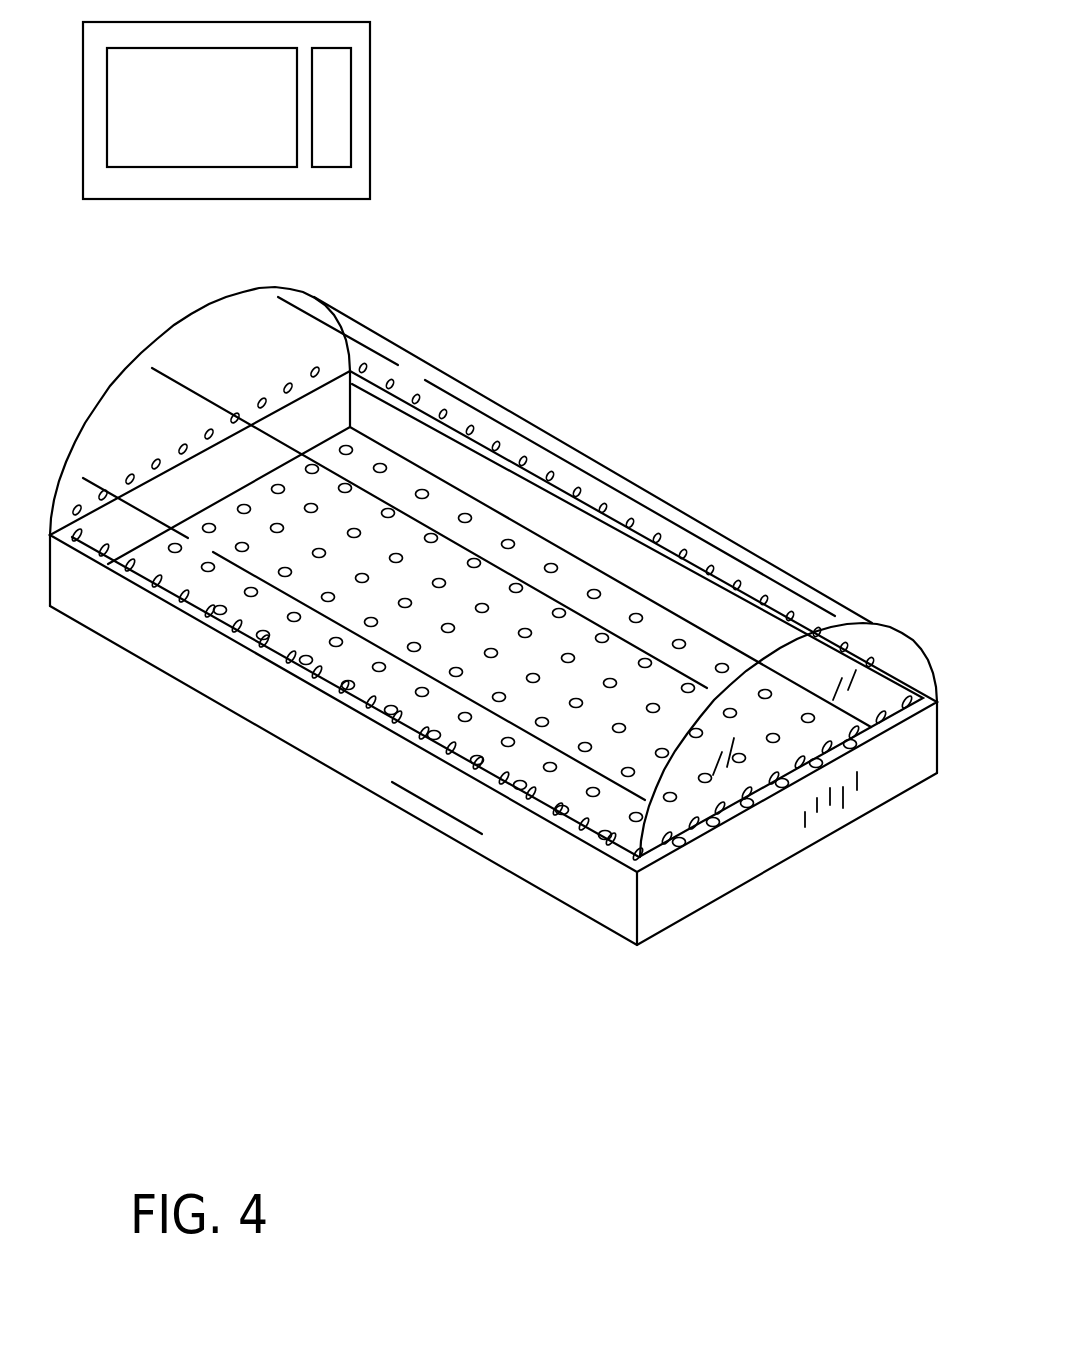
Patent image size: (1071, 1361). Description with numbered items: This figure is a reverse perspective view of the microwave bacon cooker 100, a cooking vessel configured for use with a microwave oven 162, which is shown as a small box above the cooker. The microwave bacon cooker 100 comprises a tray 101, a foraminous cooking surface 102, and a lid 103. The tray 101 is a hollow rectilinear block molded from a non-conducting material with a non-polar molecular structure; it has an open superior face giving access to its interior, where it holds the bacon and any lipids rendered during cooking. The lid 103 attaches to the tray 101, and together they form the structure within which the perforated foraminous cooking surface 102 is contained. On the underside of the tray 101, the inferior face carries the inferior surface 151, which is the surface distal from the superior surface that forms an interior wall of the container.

The microwave bacon cooker 100 is at (160, 258).
The tray 101 is at (493, 687).
The foraminous cooking surface 102 is at (498, 574).
The lid 103 is at (668, 513).
The inferior surface 151 is at (540, 932).
The microwave oven 162 is at (370, 132).